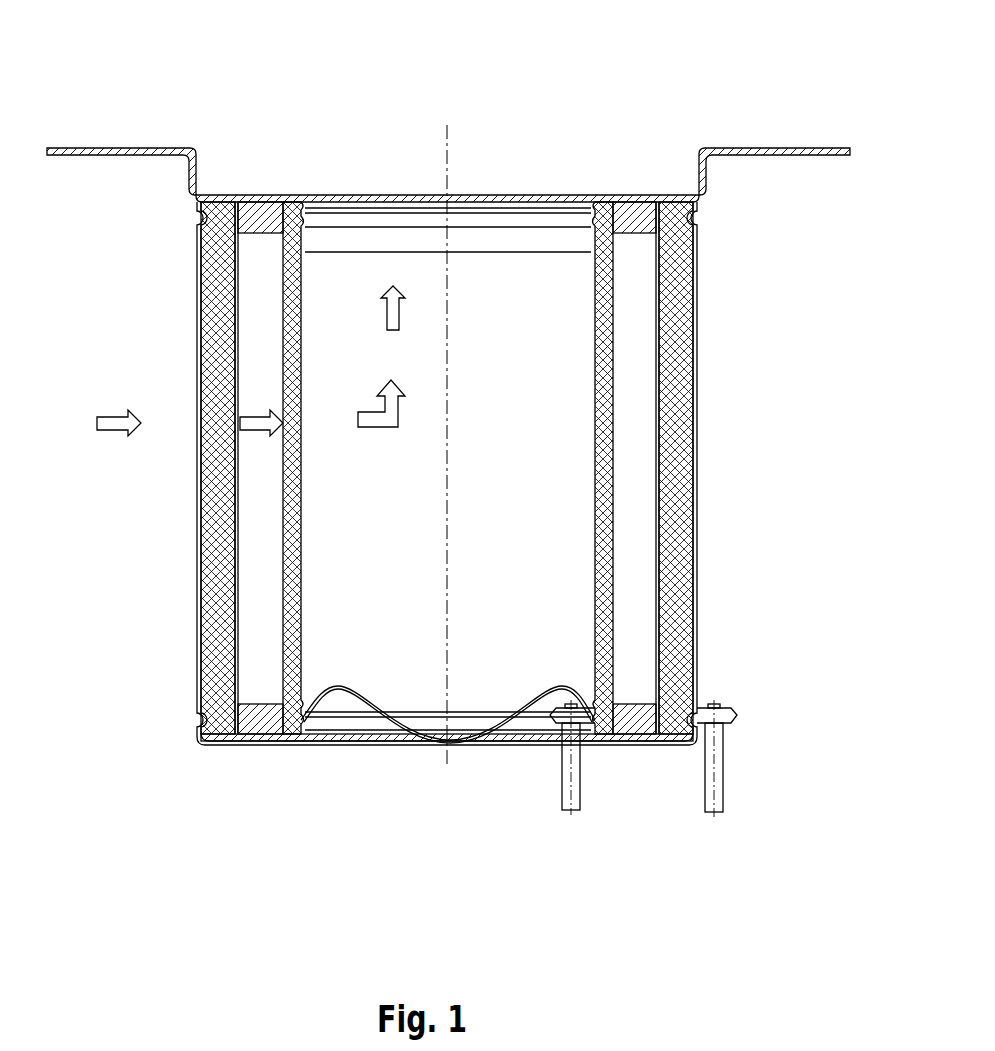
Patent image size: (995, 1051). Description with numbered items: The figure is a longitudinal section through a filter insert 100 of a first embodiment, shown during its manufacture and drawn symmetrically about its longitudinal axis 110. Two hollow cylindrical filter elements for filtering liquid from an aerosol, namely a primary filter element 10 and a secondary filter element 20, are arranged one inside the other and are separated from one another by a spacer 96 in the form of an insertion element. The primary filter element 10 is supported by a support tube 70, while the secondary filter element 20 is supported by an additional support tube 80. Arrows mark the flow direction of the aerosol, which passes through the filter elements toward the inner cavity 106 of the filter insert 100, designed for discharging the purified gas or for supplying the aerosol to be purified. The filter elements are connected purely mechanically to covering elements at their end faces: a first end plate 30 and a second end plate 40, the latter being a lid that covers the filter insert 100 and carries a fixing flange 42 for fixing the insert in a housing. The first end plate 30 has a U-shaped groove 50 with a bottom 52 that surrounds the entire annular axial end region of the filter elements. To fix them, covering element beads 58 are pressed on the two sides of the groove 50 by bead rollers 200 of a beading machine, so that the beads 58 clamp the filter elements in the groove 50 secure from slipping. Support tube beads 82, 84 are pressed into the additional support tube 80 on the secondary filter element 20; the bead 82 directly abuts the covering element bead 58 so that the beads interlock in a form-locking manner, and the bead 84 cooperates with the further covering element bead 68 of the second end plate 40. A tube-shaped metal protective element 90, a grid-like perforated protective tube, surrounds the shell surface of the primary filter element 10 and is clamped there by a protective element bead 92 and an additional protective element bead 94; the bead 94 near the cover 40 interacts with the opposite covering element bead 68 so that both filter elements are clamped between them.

The filter insert 100 is at (712, 63).
The fixing flange 42 is at (123, 148).
The second end plate 40 is at (253, 195).
The longitudinal axis 110 is at (447, 130).
The additional support tube bead 84 is at (297, 205).
The additional protective element bead 94 is at (197, 222).
The further covering element bead 68 is at (306, 218).
The spacer 96 is at (264, 213).
The support tube 70 is at (240, 240).
The primary filter element 10 is at (685, 312).
The additional support tube 80 is at (303, 305).
The inner cavity 106 is at (519, 392).
The secondary filter element 20 is at (608, 462).
The tube-shaped metal protective element 90 is at (697, 455).
The U-shaped groove 50 is at (320, 628).
The covering element bead 58 is at (208, 707).
The support tube bead 82 is at (299, 704).
The protective element bead 92 is at (197, 718).
The bottom of the U-shaped groove 52 is at (256, 745).
The first end plate 30 is at (430, 738).
The bead rollers 200 is at (566, 806).